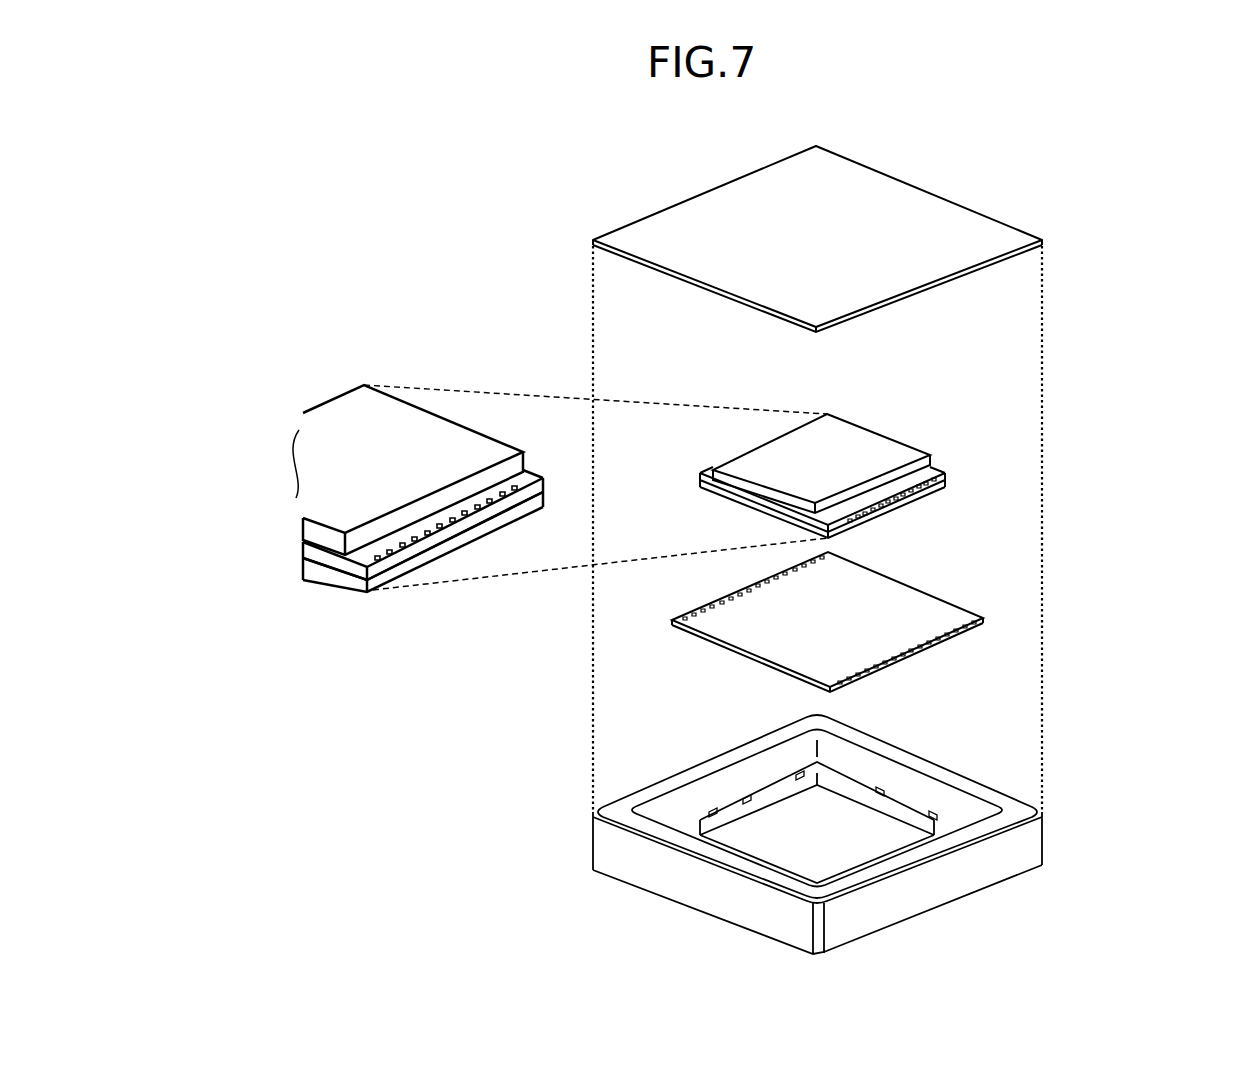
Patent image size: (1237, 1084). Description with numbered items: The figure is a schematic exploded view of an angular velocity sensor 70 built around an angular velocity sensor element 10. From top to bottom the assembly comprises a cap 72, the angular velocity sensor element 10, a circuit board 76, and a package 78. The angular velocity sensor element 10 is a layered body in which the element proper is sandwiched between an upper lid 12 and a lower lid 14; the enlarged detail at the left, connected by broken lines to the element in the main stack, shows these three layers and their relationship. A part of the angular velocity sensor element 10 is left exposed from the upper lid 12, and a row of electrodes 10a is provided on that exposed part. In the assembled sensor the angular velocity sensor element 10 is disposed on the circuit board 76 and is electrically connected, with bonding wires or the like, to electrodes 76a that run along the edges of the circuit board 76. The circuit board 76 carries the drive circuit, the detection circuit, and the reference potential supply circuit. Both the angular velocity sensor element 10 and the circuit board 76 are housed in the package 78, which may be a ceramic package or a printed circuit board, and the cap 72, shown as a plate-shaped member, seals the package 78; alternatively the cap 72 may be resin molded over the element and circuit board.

The angular velocity sensor 70 is at (1197, 233).
The cap 72 is at (975, 223).
The angular velocity sensor element 10 is at (948, 470).
The upper lid 12 is at (303, 517).
The lower lid 14 is at (303, 580).
The electrodes 10a is at (376, 553).
The circuit board 76 is at (897, 615).
The electrodes 76a is at (853, 668).
The package 78 is at (973, 777).